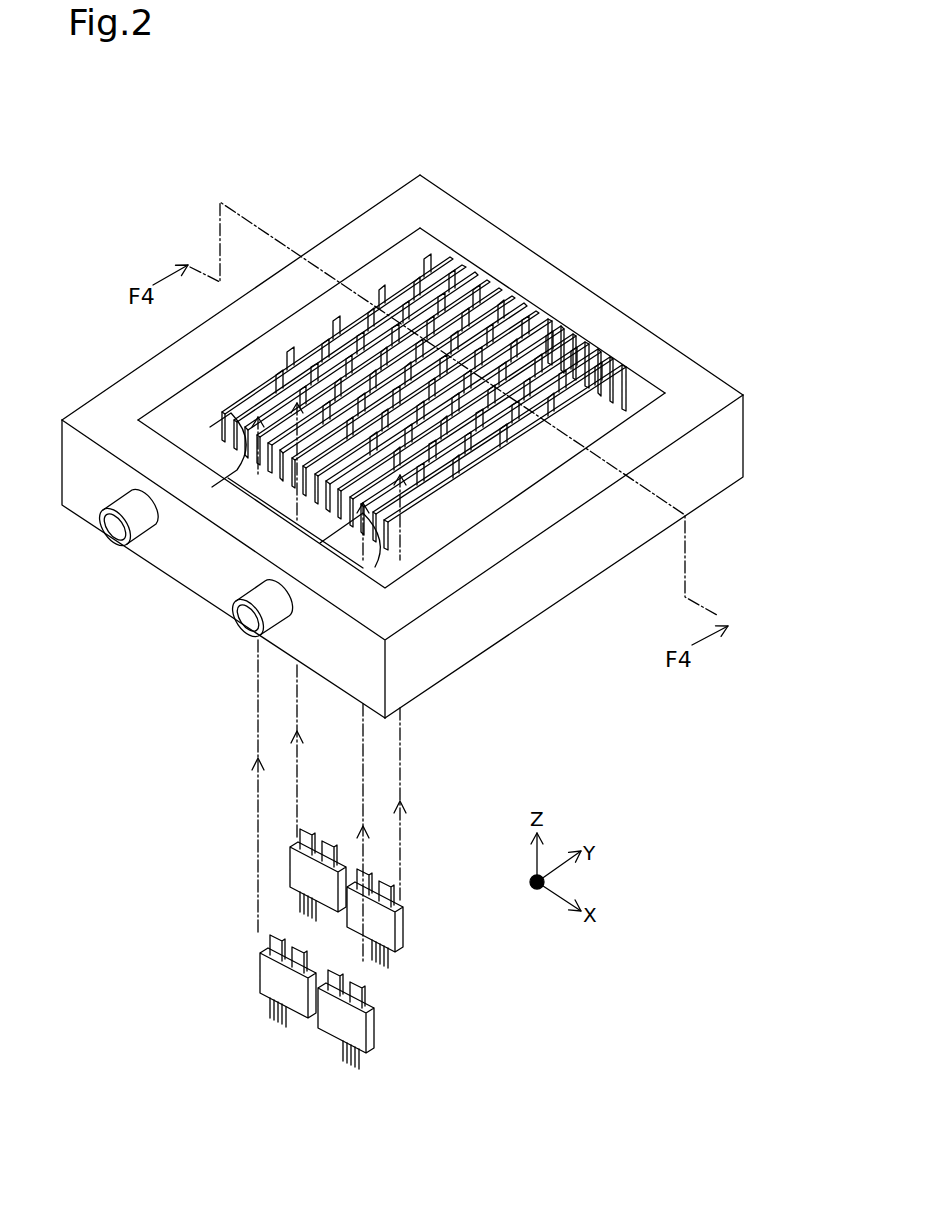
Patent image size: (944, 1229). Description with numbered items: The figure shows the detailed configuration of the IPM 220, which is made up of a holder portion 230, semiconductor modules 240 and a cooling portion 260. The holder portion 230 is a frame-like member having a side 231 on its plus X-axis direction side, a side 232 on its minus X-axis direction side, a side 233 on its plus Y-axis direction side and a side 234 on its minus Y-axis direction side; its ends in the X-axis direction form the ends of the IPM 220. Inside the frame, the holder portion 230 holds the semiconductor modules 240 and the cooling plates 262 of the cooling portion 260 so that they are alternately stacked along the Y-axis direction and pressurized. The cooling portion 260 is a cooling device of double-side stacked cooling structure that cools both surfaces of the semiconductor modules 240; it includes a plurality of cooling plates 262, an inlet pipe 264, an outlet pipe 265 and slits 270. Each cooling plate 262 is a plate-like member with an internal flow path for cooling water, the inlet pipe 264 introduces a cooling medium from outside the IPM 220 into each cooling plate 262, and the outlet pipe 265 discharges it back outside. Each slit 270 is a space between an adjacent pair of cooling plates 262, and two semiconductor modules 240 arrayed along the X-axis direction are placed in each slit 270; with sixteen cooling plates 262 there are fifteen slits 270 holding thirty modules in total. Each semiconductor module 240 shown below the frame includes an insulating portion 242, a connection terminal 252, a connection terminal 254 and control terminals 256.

The IPM 220 is at (104, 147).
The holder portion 230 is at (560, 563).
The side 231 is at (455, 545).
The side 232 is at (152, 383).
The side 233 is at (562, 295).
The side 234 is at (150, 453).
The semiconductor module 240 is at (247, 1014).
The insulating portion 242 is at (370, 1037).
The connection terminal 252 is at (273, 943).
The connection terminal 254 is at (285, 960).
The control terminals 256 is at (365, 1068).
The cooling portion 260 is at (187, 685).
The cooling plate 262 is at (272, 468).
The inlet pipe 264 is at (115, 528).
The outlet pipe 265 is at (250, 618).
The slit 270 is at (278, 432).